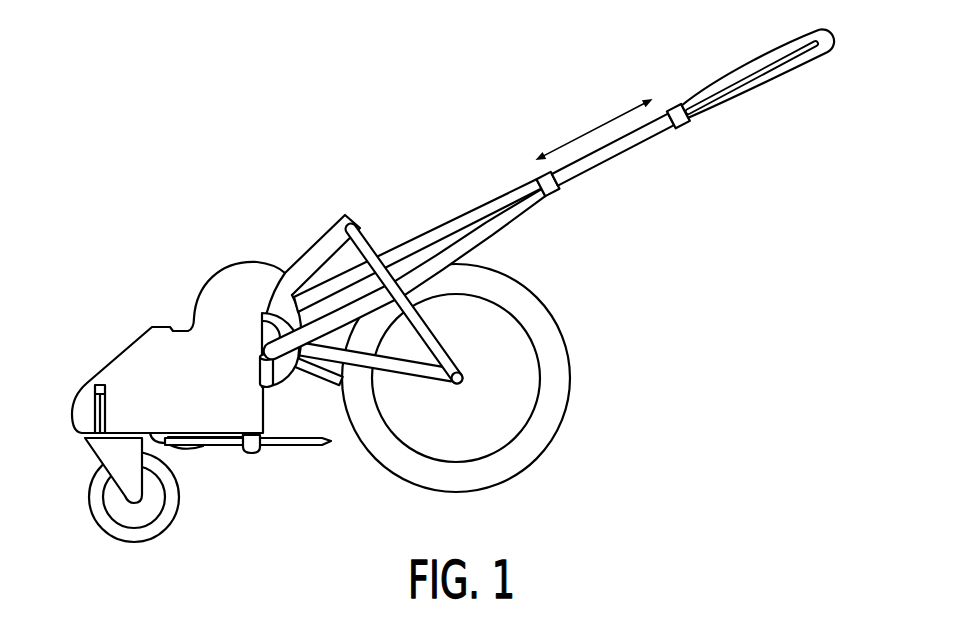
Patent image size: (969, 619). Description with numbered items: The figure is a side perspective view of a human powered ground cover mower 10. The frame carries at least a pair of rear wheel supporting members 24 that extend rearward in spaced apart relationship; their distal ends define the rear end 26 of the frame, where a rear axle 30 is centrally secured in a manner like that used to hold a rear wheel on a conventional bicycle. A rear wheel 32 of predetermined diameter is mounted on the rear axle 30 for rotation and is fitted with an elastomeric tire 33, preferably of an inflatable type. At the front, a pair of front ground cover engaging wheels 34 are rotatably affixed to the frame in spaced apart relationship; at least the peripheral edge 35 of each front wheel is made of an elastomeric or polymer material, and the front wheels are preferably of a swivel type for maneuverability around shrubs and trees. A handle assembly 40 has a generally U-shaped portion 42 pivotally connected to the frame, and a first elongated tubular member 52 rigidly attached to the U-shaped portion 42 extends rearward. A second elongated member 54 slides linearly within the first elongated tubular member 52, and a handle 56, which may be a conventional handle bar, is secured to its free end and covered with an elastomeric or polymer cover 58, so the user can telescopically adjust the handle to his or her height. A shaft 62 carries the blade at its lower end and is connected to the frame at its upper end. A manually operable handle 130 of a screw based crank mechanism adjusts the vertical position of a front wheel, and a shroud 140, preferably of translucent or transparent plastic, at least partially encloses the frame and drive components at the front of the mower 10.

The human powered ground cover mower 10 is at (398, 139).
The rear wheel supporting members 24 is at (362, 252).
The rear end 26 is at (447, 384).
The rear axle 30 is at (463, 381).
The rear wheel 32 is at (522, 368).
The elastomeric tire 33 is at (560, 377).
The front ground cover engaging wheels 34 is at (135, 514).
The peripheral edge 35 is at (100, 528).
The handle assembly 40 is at (492, 186).
The generally U-shaped portion 42 is at (488, 237).
The first elongated tubular member 52 is at (625, 145).
The second elongated member 54 is at (700, 107).
The handle 56 is at (747, 83).
The cover 58 is at (823, 50).
The shaft 62 is at (300, 450).
The manually operable handle 130 is at (97, 387).
The shroud 140 is at (238, 278).